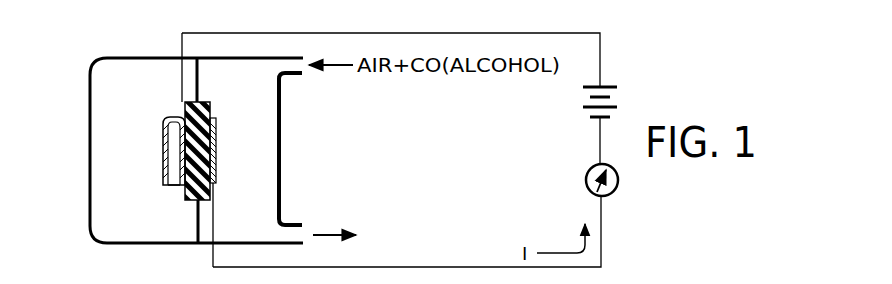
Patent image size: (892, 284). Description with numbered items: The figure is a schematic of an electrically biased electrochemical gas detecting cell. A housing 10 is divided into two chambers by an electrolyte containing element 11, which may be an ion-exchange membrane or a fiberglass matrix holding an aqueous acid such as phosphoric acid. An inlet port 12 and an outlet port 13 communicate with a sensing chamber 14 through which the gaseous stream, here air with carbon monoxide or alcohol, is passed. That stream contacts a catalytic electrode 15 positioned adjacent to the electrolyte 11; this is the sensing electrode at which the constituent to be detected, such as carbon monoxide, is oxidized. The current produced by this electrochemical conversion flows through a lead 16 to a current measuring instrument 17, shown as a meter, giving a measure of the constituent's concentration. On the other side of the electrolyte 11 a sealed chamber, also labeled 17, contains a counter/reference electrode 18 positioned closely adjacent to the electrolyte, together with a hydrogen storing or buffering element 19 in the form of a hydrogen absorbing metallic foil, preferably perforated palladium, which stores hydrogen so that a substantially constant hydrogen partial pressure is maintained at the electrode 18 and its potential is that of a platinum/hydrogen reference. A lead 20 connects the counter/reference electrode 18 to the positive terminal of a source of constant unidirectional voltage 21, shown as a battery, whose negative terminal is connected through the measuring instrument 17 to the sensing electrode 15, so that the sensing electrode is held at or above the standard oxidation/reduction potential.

The housing 10 is at (137, 58).
The electrolyte containing element 11 is at (202, 101).
The inlet port 12 is at (303, 62).
The outlet port 13 is at (305, 230).
The sensing chamber 14 is at (280, 148).
The catalytic electrode 15 is at (217, 152).
The lead 16 is at (417, 267).
The current measuring instrument 17 is at (77, 153).
The counter/reference electrode 18 is at (168, 187).
The hydrogen storing or buffering element 19 is at (165, 123).
The lead 20 is at (571, 31).
The source of constant unidirectional voltage 21 is at (612, 98).